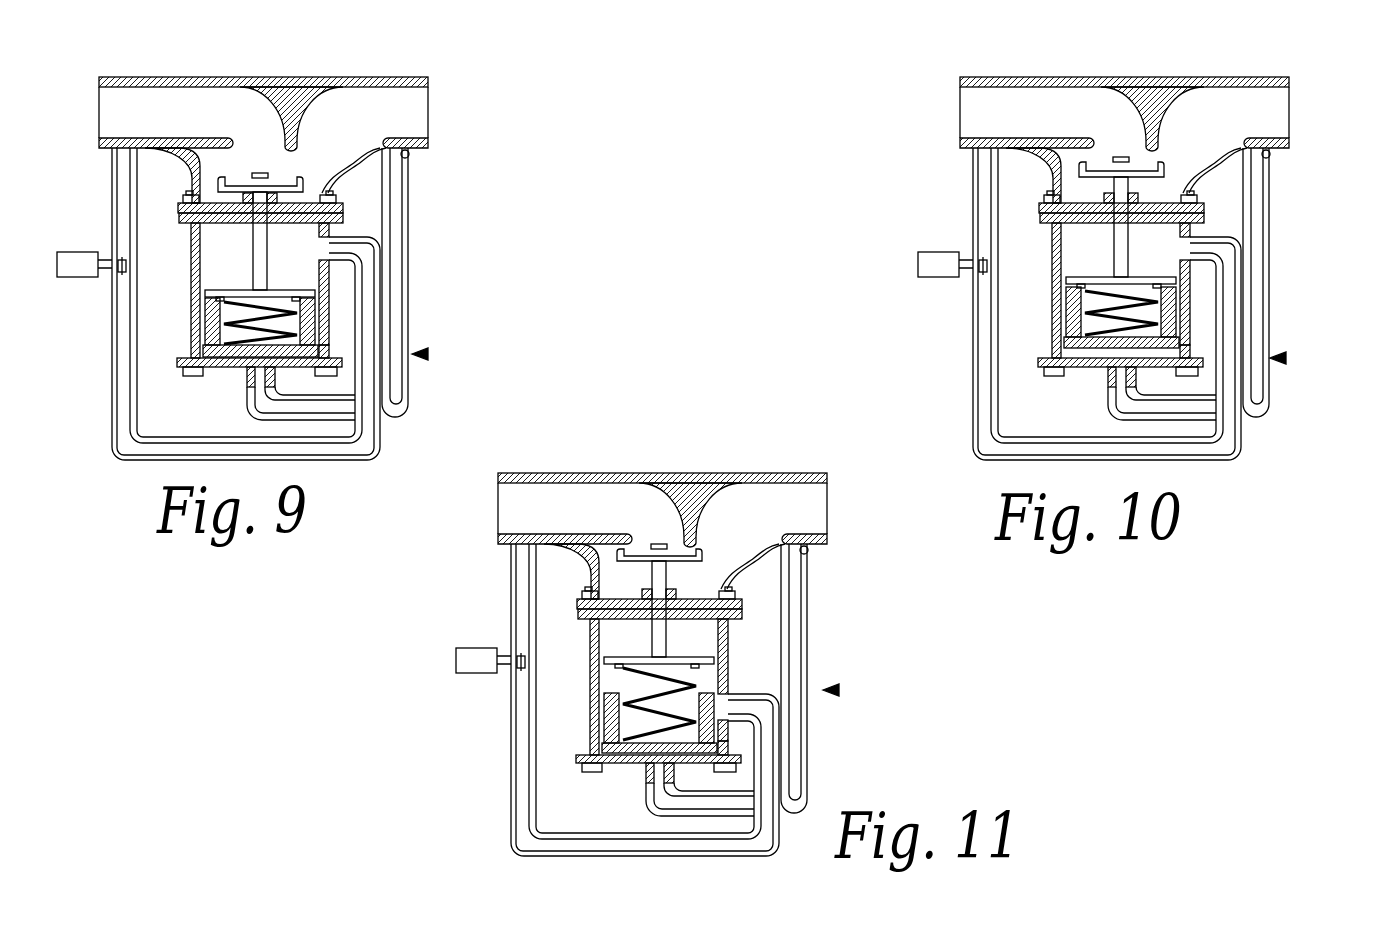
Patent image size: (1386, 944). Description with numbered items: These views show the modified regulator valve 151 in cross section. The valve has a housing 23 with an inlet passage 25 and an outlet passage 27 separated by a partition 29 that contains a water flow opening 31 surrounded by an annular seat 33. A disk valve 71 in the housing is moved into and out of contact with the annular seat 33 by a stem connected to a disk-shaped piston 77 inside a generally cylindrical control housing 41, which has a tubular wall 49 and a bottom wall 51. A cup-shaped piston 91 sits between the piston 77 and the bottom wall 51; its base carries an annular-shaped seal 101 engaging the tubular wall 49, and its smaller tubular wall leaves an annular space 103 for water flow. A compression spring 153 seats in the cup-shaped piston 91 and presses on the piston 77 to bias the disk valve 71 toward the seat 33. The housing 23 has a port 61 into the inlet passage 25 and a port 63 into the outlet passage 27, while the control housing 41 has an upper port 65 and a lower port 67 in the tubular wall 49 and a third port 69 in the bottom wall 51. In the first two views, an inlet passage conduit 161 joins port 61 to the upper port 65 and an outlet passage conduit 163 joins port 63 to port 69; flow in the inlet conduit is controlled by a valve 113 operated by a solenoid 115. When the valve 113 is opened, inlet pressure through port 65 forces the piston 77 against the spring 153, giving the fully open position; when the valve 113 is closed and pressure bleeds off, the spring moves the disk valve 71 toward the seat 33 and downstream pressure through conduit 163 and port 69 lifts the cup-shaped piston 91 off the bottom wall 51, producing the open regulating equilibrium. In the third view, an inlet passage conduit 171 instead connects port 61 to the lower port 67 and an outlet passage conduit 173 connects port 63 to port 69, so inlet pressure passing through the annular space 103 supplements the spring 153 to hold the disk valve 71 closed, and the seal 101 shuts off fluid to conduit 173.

In FIG. 9, the housing 23 is at (290, 95).
In FIG. 10, the housing 23 is at (1124, 95).
In FIG. 11, the housing 23 is at (662, 490).
In FIG. 9, the inlet passage 25 is at (110, 113).
In FIG. 10, the inlet passage 25 is at (999, 117).
In FIG. 11, the inlet passage 25 is at (537, 513).
In FIG. 9, the outlet passage 27 is at (425, 113).
In FIG. 10, the outlet passage 27 is at (1295, 117).
In FIG. 11, the outlet passage 27 is at (832, 513).
In FIG. 10, the partition 29 is at (1040, 147).
In FIG. 9, the water flow opening 31 is at (238, 150).
In FIG. 11, the water flow opening 31 is at (595, 543).
In FIG. 9, the annular seat 33 is at (285, 166).
In FIG. 10, the annular seat 33 is at (1164, 130).
In FIG. 11, the annular seat 33 is at (681, 572).
In FIG. 9, the control housing 41 is at (192, 240).
In FIG. 10, the control housing 41 is at (1101, 274).
In FIG. 11, the control housing 41 is at (641, 671).
In FIG. 9, the tubular wall 49 is at (379, 272).
In FIG. 10, the tubular wall 49 is at (1290, 345).
In FIG. 11, the tubular wall 49 is at (805, 742).
In FIG. 10, the bottom wall 51 is at (1116, 401).
In FIG. 11, the bottom wall 51 is at (660, 798).
In FIG. 9, the port 61 is at (133, 150).
In FIG. 10, the port 61 is at (1070, 295).
In FIG. 11, the port 61 is at (609, 691).
In FIG. 9, the port 63 is at (410, 156).
In FIG. 10, the port 63 is at (1288, 167).
In FIG. 11, the port 63 is at (825, 563).
In FIG. 9, the upper port 65 is at (345, 242).
In FIG. 10, the upper port 65 is at (1216, 235).
In FIG. 11, the upper port 65 is at (753, 665).
In FIG. 9, the lower port 67 is at (332, 310).
In FIG. 10, the lower port 67 is at (1244, 305).
In FIG. 11, the lower port 67 is at (790, 719).
In FIG. 9, the third port 69 is at (248, 398).
In FIG. 10, the third port 69 is at (1135, 393).
In FIG. 11, the third port 69 is at (673, 789).
In FIG. 9, the disk valve 71 is at (302, 178).
In FIG. 10, the disk valve 71 is at (1170, 143).
In FIG. 11, the disk valve 71 is at (686, 531).
In FIG. 9, the piston 77 is at (235, 290).
In FIG. 10, the piston 77 is at (1121, 232).
In FIG. 11, the piston 77 is at (659, 614).
In FIG. 9, the cup-shaped piston 91 is at (208, 320).
In FIG. 10, the cup-shaped piston 91 is at (1087, 312).
In FIG. 11, the cup-shaped piston 91 is at (625, 705).
In FIG. 9, the annular-shaped seal 101 is at (331, 352).
In FIG. 10, the annular-shaped seal 101 is at (1092, 360).
In FIG. 11, the annular-shaped seal 101 is at (809, 738).
In FIG. 9, the annular space 103 is at (207, 346).
In FIG. 10, the annular space 103 is at (1206, 370).
In FIG. 11, the annular space 103 is at (625, 760).
In FIG. 9, the valve 113 is at (112, 278).
In FIG. 10, the valve 113 is at (945, 290).
In FIG. 11, the valve 113 is at (482, 687).
In FIG. 9, the solenoid 115 is at (62, 274).
In FIG. 10, the solenoid 115 is at (945, 263).
In FIG. 11, the solenoid 115 is at (483, 659).
In FIG. 9, the modified regulator valve 151 is at (428, 354).
In FIG. 10, the modified regulator valve 151 is at (1325, 360).
In FIG. 11, the modified regulator valve 151 is at (889, 688).
In FIG. 9, the compression spring 153 is at (225, 360).
In FIG. 10, the compression spring 153 is at (1105, 387).
In FIG. 11, the compression spring 153 is at (642, 791).
In FIG. 9, the inlet passage conduit 161 is at (120, 390).
In FIG. 10, the inlet passage conduit 161 is at (1071, 304).
In FIG. 9, the outlet passage conduit 163 is at (396, 200).
In FIG. 10, the outlet passage conduit 163 is at (1295, 282).
In FIG. 11, the inlet passage conduit 171 is at (608, 700).
In FIG. 11, the outlet passage conduit 173 is at (839, 678).